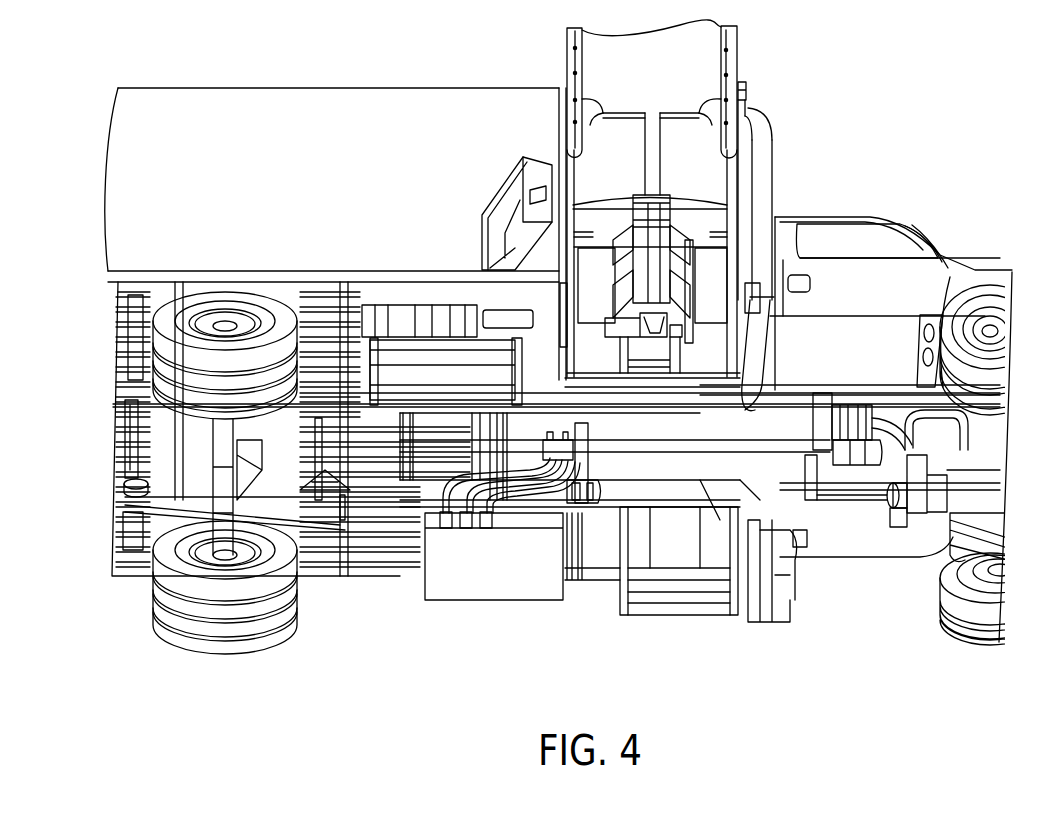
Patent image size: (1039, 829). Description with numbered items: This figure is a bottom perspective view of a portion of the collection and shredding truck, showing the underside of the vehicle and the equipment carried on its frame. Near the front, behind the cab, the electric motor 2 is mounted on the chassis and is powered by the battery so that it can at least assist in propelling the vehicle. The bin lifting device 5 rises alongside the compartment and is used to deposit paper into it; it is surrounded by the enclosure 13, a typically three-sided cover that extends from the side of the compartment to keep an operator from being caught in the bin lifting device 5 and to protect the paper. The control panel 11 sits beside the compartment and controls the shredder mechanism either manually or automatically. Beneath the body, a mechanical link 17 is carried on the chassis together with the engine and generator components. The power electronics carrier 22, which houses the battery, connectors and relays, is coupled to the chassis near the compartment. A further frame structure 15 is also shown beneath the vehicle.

The electric motor 2 is at (870, 510).
The bin lifting device 5 is at (675, 270).
The control panel 11 is at (500, 200).
The enclosure 13 is at (728, 68).
The bracket frame 15 is at (722, 573).
The mechanical link 17 is at (850, 457).
The power electronics carrier 22 is at (425, 300).